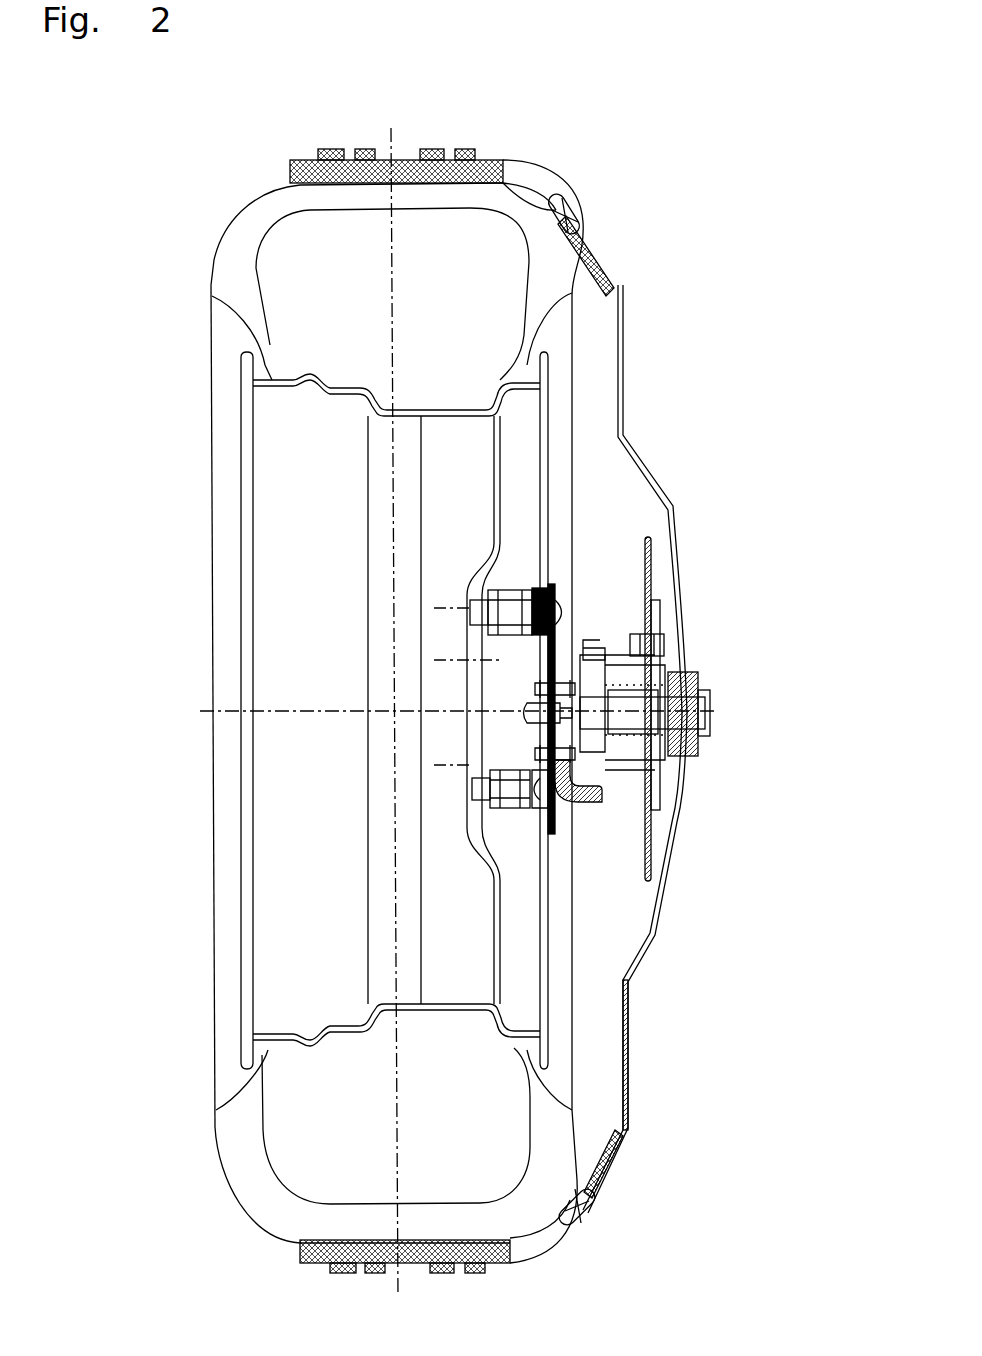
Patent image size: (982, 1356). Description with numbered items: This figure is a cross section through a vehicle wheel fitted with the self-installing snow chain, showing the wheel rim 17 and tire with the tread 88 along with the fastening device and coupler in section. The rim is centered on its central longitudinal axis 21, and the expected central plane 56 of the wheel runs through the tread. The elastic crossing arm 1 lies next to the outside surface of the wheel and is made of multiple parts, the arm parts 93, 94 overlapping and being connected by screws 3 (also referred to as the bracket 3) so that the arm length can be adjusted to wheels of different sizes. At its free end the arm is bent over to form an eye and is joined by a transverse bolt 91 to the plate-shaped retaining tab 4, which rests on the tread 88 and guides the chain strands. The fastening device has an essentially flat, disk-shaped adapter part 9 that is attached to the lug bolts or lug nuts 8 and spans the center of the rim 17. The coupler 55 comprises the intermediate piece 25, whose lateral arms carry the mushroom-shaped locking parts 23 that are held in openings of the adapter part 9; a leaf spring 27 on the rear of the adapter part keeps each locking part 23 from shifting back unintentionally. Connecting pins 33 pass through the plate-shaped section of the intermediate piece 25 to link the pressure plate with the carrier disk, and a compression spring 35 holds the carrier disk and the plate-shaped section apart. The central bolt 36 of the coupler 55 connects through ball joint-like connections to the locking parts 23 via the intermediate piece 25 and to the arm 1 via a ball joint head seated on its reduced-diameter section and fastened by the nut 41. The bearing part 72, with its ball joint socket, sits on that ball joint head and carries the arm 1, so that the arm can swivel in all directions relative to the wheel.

The crossing arm 1 is at (624, 1030).
The screw 3 is at (620, 270).
The retaining tab 4 is at (546, 180).
The lug bolt or lug nut 8 is at (495, 788).
The adapter part 9 is at (574, 648).
The wheel rim 17 is at (300, 461).
The central longitudinal axis 21 is at (345, 713).
The locking part 23 is at (560, 795).
The intermediate piece 25 is at (582, 632).
The leaf spring 27 is at (612, 748).
The connecting pin 33 is at (617, 752).
The compression spring 35 is at (655, 760).
The central bolt 36 is at (640, 712).
The nut 41 is at (694, 718).
The coupler 55 is at (602, 545).
The central plane 56 is at (392, 283).
The bearing part 72 is at (678, 750).
The tread 88 is at (396, 150).
The transverse bolt 91 is at (584, 220).
The arm part 93 is at (622, 328).
The arm part 94 is at (535, 195).